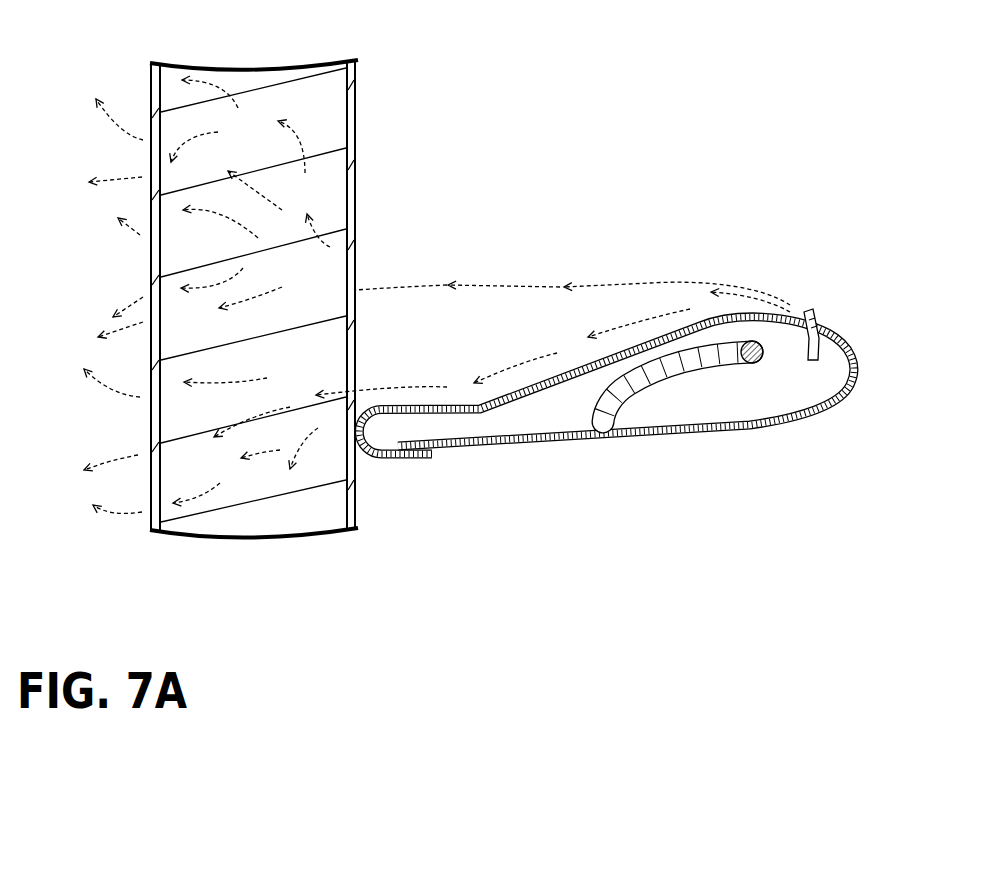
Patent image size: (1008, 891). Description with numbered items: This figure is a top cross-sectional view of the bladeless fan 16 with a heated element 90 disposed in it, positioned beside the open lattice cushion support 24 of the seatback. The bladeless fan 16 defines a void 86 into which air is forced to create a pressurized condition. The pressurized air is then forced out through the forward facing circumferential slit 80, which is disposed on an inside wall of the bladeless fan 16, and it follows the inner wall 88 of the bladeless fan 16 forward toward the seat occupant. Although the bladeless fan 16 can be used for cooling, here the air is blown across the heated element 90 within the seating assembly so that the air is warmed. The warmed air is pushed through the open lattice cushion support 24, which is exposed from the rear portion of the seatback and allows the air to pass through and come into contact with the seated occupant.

The open lattice cushion support 24 is at (330, 133).
The bladeless fan 16 is at (632, 373).
The inner wall 88 is at (577, 363).
The void 86 is at (502, 420).
The slit 80 is at (843, 367).
The heated element 90 is at (715, 363).